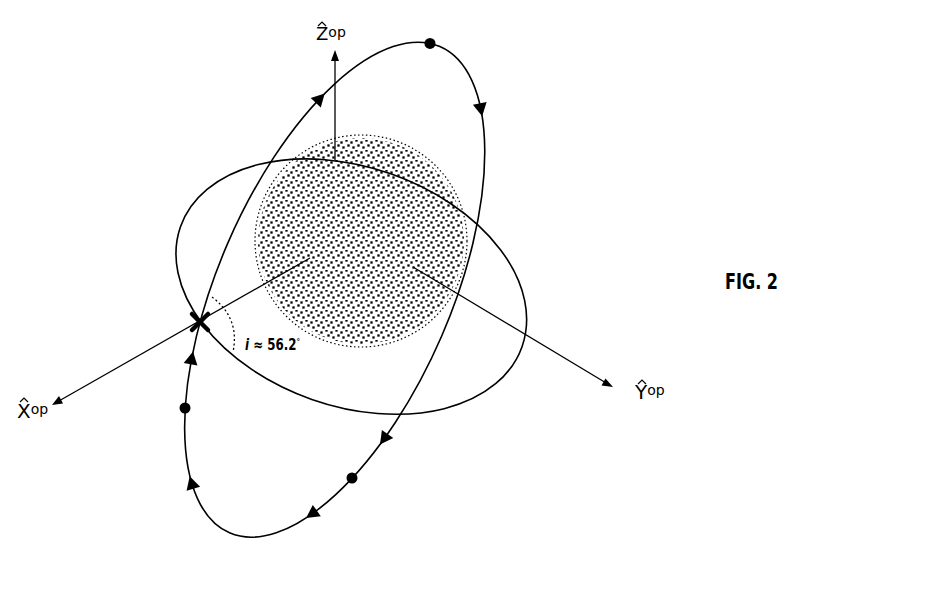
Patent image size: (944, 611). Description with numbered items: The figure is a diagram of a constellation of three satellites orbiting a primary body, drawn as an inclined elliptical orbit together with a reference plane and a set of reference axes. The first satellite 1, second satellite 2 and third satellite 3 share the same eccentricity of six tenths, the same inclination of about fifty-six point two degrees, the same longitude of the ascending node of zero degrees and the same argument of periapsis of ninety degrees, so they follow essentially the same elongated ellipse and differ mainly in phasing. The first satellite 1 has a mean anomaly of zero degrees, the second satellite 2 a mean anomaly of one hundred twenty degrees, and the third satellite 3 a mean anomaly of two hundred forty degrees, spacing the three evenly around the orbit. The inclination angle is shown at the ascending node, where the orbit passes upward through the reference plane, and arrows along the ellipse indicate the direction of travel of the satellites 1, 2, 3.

The first satellite 1 is at (466, 44).
The second satellite 2 is at (393, 490).
The third satellite 3 is at (145, 413).